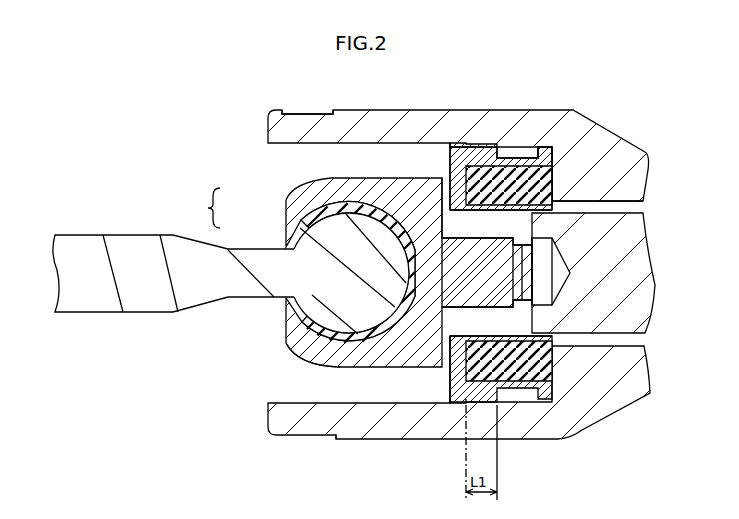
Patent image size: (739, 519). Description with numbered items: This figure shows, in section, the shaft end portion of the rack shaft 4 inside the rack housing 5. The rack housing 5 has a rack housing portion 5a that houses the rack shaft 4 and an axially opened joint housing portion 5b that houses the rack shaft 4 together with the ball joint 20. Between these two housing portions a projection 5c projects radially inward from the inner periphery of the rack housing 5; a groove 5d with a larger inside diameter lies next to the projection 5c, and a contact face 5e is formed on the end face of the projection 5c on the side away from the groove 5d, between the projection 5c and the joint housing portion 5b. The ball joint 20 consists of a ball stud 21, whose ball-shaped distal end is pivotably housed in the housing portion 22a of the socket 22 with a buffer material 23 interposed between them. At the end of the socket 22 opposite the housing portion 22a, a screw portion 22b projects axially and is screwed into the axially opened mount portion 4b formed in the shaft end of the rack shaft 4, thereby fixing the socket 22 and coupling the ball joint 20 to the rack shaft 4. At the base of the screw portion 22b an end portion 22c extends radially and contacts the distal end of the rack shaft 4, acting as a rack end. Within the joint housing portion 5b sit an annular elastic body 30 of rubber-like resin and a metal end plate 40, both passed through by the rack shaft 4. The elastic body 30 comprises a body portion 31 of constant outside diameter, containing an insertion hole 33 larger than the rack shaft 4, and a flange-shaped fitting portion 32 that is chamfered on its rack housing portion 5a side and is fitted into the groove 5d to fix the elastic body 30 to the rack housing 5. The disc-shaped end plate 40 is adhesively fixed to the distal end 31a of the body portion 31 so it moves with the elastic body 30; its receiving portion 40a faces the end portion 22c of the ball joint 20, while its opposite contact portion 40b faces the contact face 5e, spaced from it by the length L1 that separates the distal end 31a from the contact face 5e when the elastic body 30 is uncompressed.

The rack shaft 4 is at (646, 251).
The mount portion 4b is at (554, 245).
The rack housing 5 is at (392, 126).
The rack housing portion 5a is at (643, 206).
The joint housing portion 5b is at (316, 146).
The projection 5c is at (520, 157).
The groove 5d is at (553, 150).
The contact face 5e is at (495, 140).
The ball joint 20 is at (201, 208).
The ball stud 21 is at (242, 247).
The socket 22 is at (298, 187).
The housing portion 22a is at (341, 216).
The screw portion 22b is at (467, 299).
The end portion 22c is at (443, 181).
The buffer material 23 is at (287, 342).
The elastic body 30 is at (563, 385).
The body portion 31 is at (508, 383).
The distal end 31a is at (457, 214).
The fitting portion 32 is at (540, 383).
The insertion hole 33 is at (556, 210).
The end plate 40 is at (440, 415).
The receiving portion 40a is at (448, 383).
The contact portion 40b is at (466, 396).